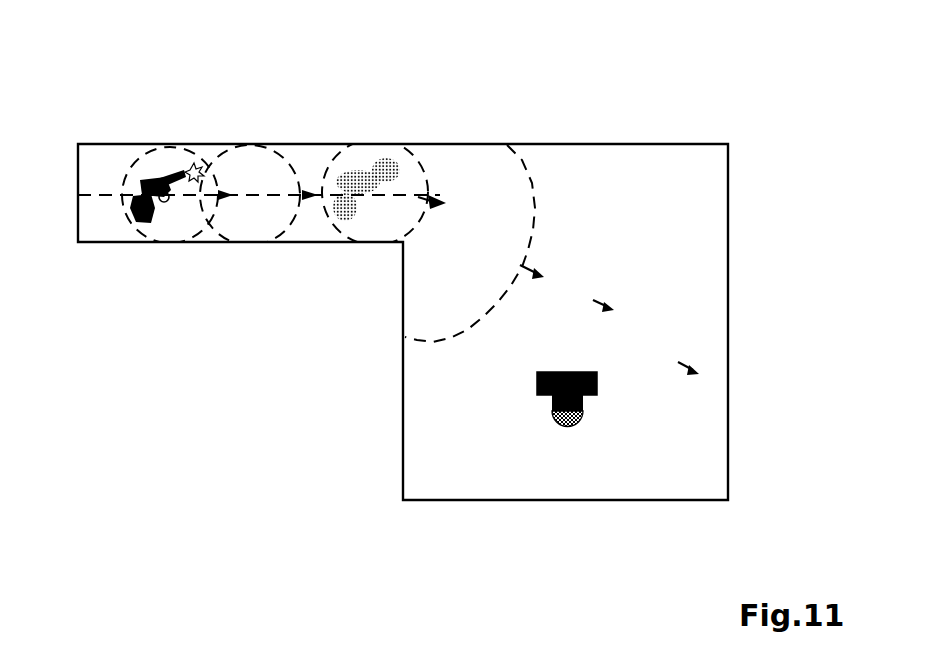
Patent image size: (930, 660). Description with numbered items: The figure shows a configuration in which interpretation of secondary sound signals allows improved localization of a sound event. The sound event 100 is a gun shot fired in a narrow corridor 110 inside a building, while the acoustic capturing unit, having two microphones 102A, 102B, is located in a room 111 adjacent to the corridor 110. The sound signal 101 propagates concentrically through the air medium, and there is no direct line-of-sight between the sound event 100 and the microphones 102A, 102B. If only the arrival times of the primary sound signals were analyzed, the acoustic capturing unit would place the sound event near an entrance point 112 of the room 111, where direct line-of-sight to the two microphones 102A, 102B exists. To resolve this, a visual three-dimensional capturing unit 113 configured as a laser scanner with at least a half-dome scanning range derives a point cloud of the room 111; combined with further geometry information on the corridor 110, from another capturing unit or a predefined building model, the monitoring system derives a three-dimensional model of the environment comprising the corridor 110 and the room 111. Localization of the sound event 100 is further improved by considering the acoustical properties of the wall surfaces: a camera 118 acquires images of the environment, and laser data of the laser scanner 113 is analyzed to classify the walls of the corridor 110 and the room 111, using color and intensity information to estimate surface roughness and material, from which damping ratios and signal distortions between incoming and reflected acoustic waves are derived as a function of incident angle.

The sound event 100 is at (195, 171).
The sound signal 101 is at (535, 208).
The microphone 102A is at (537, 394).
The microphone 102B is at (590, 394).
The corridor 110 is at (277, 229).
The room 111 is at (677, 245).
The entrance point 112 is at (385, 165).
The visual 3D capturing unit 113 is at (562, 427).
The camera 118 is at (598, 398).